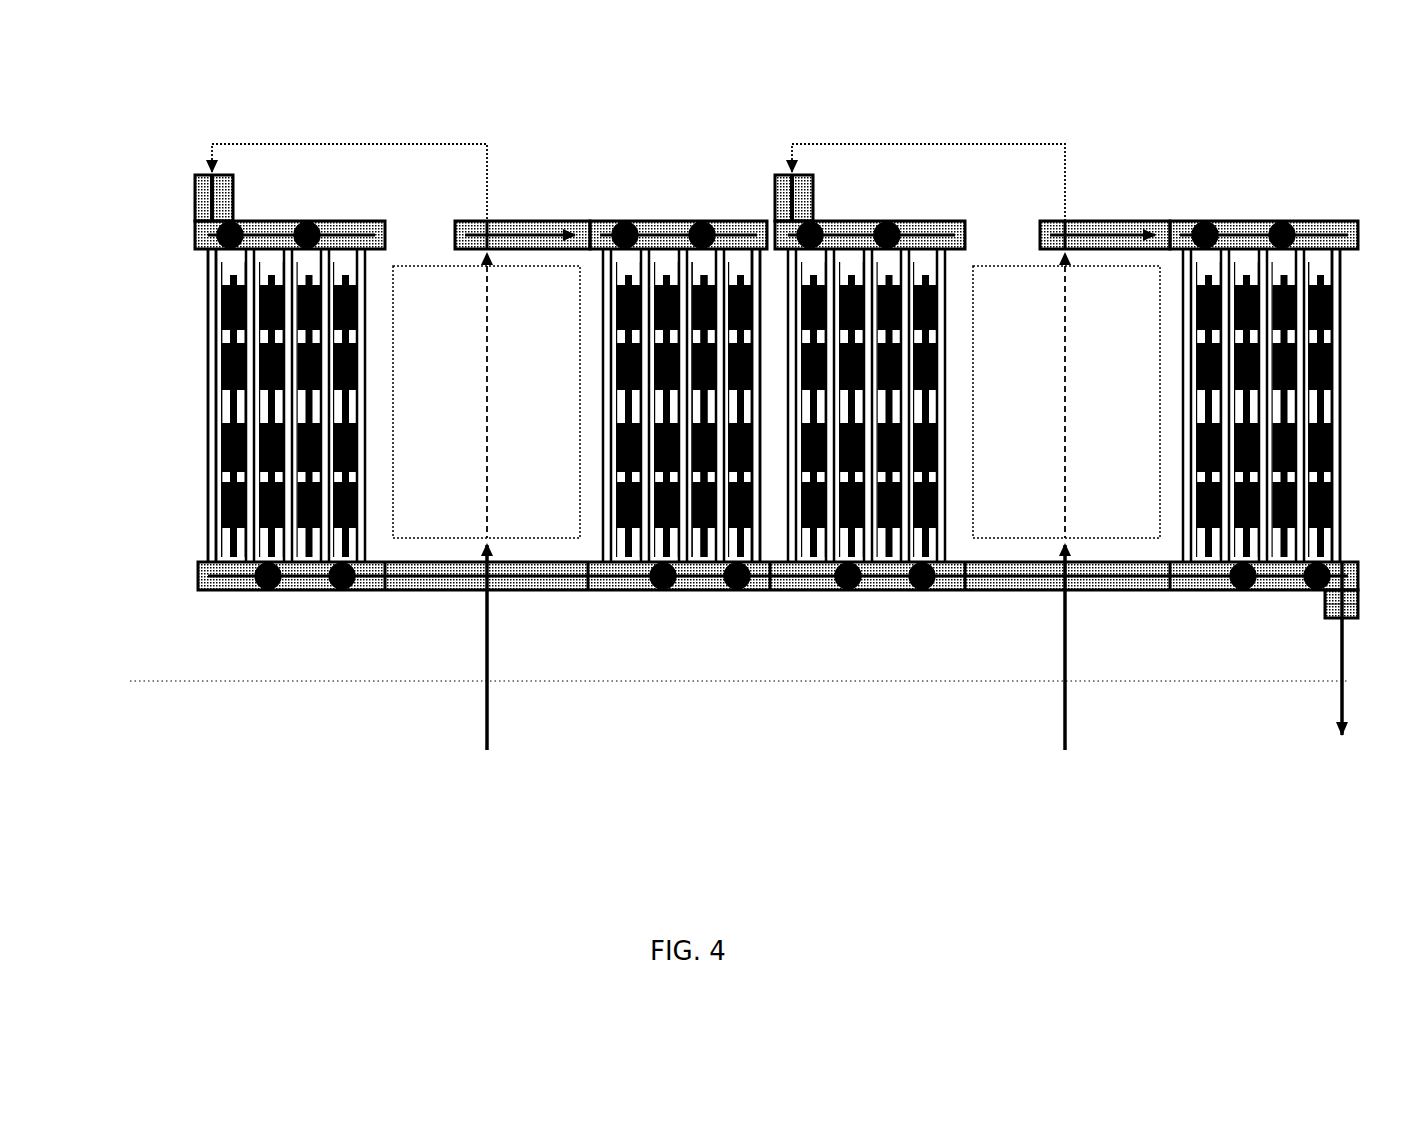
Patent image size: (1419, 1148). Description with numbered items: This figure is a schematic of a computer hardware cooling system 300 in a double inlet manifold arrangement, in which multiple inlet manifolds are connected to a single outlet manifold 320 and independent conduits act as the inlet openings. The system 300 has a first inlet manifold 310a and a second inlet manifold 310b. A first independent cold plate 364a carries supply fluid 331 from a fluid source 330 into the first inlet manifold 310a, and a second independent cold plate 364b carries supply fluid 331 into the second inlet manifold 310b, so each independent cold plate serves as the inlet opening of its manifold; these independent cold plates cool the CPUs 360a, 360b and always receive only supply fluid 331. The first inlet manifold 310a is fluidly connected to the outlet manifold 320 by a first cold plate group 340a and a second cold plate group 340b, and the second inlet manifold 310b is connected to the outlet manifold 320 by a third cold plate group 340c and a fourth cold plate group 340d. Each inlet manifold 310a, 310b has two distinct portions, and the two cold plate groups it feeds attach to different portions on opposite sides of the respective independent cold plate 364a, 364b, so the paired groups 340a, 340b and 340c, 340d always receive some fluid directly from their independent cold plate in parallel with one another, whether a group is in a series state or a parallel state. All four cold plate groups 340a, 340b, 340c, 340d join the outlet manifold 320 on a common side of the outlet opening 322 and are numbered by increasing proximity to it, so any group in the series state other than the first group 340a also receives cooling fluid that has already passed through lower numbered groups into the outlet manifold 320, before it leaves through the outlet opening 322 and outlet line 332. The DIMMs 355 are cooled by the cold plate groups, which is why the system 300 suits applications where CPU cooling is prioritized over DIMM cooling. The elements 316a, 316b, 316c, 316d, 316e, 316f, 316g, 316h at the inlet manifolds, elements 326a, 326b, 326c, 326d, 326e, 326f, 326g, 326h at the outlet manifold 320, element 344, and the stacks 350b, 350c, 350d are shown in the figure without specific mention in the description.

The system 300 is at (452, 90).
The first inlet manifold 310a is at (420, 266).
The second inlet manifold 310b is at (1000, 266).
The inlet valve 316a is at (236, 222).
The inlet valve 316b is at (315, 222).
The inlet valve 316c is at (617, 222).
The inlet valve 316d is at (697, 222).
The inlet valve 316e is at (822, 222).
The inlet valve 316f is at (895, 222).
The inlet valve 316g is at (1195, 222).
The inlet valve 316h is at (1270, 222).
The outlet manifold 320 is at (1345, 558).
The outlet opening 322 is at (1360, 620).
The outlet valve 326a is at (266, 592).
The outlet valve 326b is at (344, 592).
The outlet valve 326c is at (665, 592).
The outlet valve 326d is at (740, 592).
The outlet valve 326e is at (848, 592).
The outlet valve 326f is at (922, 592).
The outlet valve 326g is at (1243, 592).
The outlet valve 326h is at (1318, 592).
The fluid source 330 is at (372, 678).
The supply fluid 331 is at (486, 720).
The outlet port 332 is at (1330, 618).
The first cold plate group 340a is at (200, 537).
The second cold plate group 340b is at (612, 520).
The third cold plate group 340c is at (982, 525).
The fourth cold plate group 340d is at (1176, 525).
The tube 344 is at (210, 475).
The cell stack 350b is at (188, 507).
The cell stack 350c is at (963, 493).
The cell stack 350d is at (1168, 492).
The DIMM 355 is at (225, 400).
The CPU 360a is at (530, 262).
The CPU 360b is at (1108, 262).
The first independent cold plate 364a is at (492, 440).
The second independent cold plate 364b is at (1070, 460).